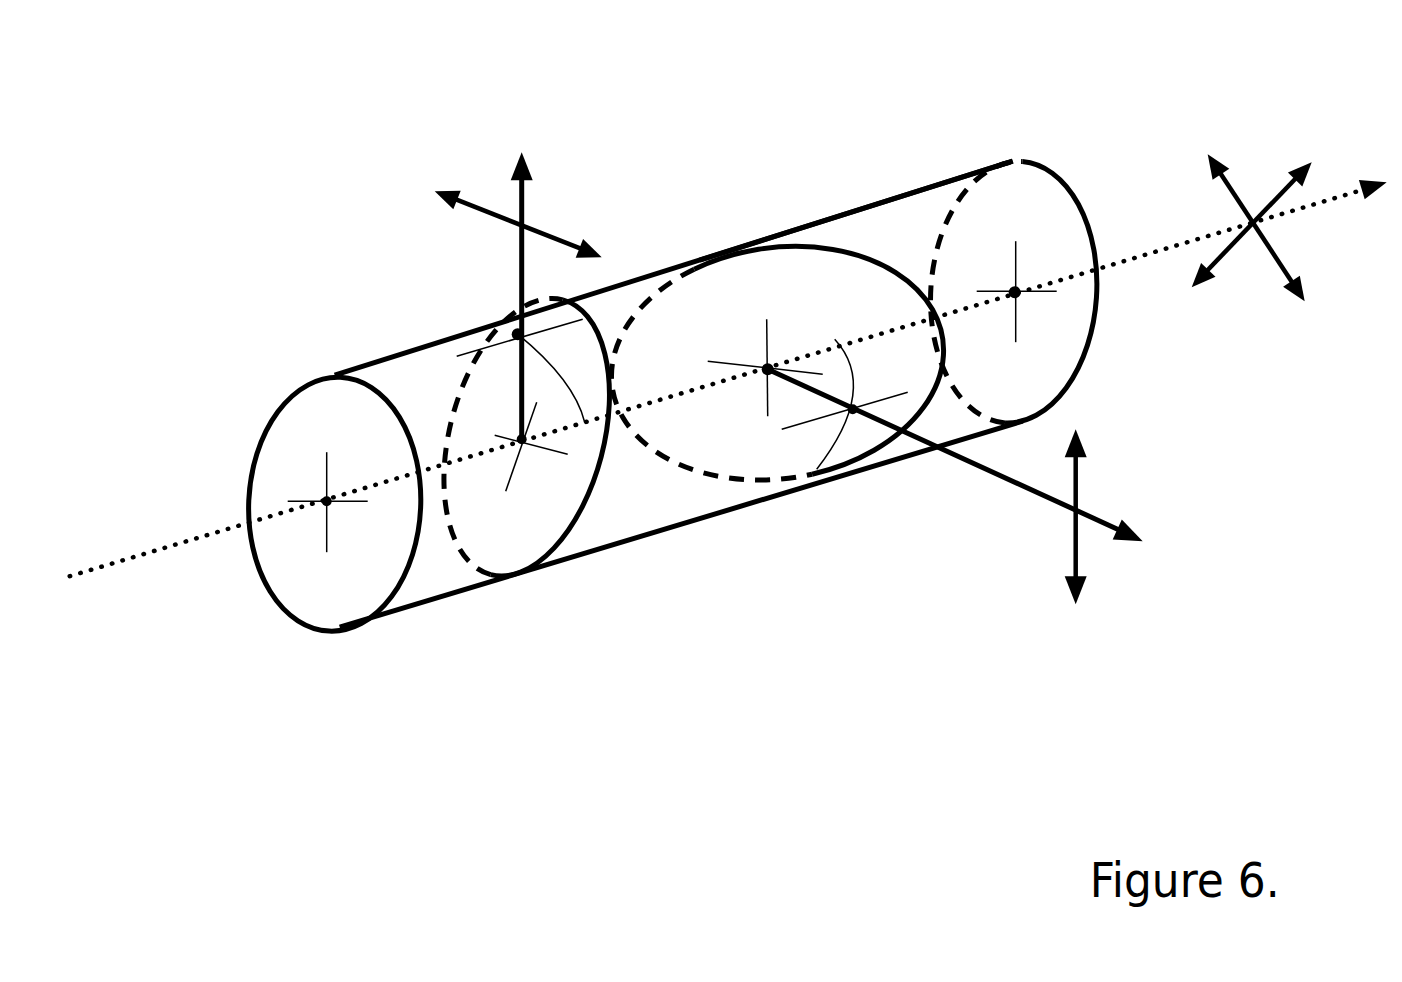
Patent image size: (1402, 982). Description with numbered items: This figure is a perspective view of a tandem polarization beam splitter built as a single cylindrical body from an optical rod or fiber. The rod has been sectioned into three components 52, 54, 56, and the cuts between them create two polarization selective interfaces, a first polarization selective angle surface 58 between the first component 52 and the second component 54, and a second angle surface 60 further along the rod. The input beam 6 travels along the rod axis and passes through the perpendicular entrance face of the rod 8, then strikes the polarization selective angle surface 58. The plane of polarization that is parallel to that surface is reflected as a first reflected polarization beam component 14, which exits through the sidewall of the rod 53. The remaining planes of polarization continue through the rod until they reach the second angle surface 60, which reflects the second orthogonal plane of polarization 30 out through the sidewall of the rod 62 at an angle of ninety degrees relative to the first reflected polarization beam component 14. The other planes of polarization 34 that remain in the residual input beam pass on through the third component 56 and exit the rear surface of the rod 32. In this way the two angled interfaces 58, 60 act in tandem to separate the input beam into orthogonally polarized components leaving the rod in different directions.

The input beam 6 is at (726, 378).
The entrance face of the rod 8 is at (327, 502).
The first reflected polarization beam component 14 is at (528, 295).
The second orthogonal plane of polarization 30 is at (1121, 523).
The rear surface of the rod 32 is at (1015, 293).
The other planes of polarization 34 is at (1252, 198).
The first rod component 52 is at (413, 345).
The sidewall of the rod 53 is at (518, 335).
The second rod component 54 is at (672, 528).
The third rod component 56 is at (832, 218).
The polarization selective angle surface 58 is at (522, 440).
The second angle surface 60 is at (768, 370).
The sidewall of the rod 62 is at (838, 345).